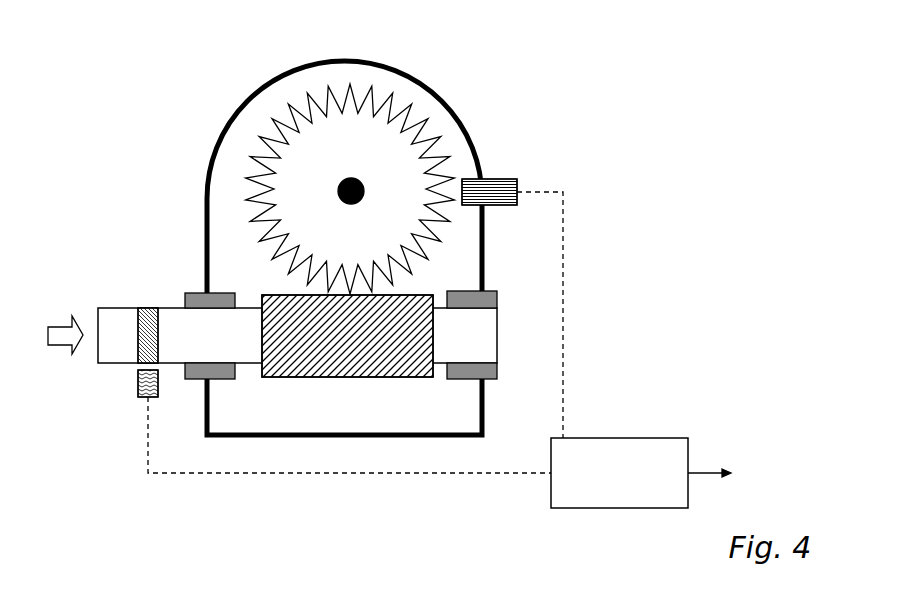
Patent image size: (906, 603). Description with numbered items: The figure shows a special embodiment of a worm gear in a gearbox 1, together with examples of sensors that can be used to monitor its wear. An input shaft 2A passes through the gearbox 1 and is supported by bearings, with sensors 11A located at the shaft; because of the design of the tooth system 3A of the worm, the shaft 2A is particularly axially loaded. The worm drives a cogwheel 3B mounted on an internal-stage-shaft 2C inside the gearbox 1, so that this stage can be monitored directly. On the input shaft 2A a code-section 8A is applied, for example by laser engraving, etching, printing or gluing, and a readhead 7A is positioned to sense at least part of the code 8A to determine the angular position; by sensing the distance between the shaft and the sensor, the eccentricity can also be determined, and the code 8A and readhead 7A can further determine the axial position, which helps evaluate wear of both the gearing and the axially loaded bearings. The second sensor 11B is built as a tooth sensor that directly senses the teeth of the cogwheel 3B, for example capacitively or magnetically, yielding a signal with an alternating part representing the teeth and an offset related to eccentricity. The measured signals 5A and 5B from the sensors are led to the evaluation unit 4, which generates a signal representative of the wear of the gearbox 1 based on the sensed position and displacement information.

The gearbox 1 is at (427, 82).
The input shaft 2A is at (118, 345).
The internal-stage-shaft 2C is at (340, 187).
The tooth system 3A is at (330, 367).
The cogwheel 3B is at (325, 123).
The evaluation unit 4 is at (641, 473).
The measured signal 5A is at (480, 473).
The measured signal 5B is at (562, 355).
The readhead 7A is at (142, 395).
The code-section 8A is at (147, 312).
The sensor 11A is at (190, 297).
The tooth sensor 11B is at (518, 177).